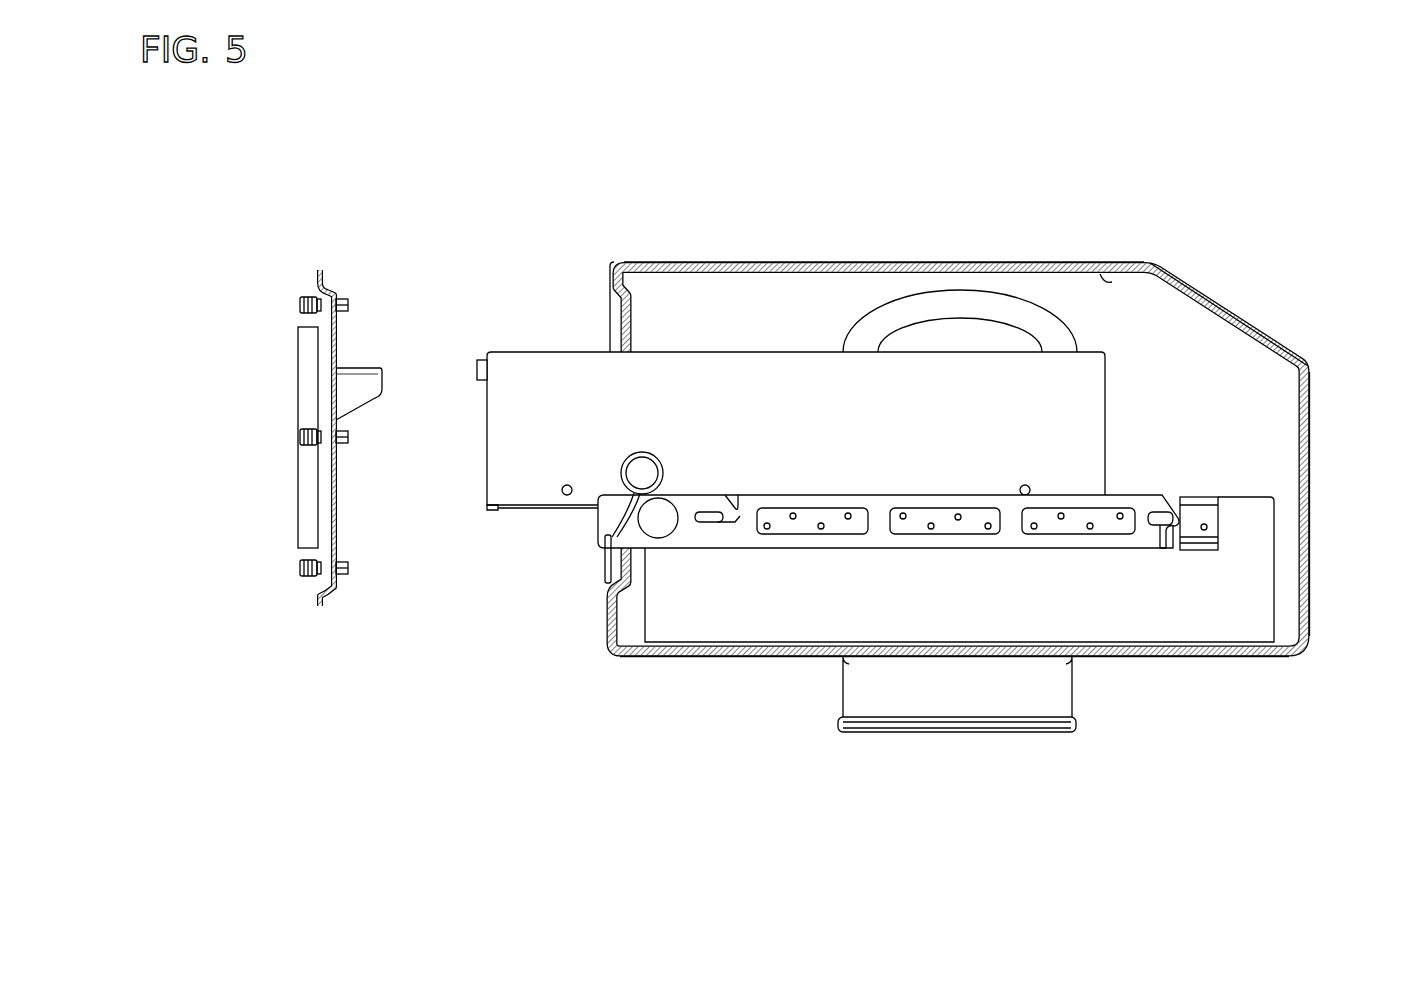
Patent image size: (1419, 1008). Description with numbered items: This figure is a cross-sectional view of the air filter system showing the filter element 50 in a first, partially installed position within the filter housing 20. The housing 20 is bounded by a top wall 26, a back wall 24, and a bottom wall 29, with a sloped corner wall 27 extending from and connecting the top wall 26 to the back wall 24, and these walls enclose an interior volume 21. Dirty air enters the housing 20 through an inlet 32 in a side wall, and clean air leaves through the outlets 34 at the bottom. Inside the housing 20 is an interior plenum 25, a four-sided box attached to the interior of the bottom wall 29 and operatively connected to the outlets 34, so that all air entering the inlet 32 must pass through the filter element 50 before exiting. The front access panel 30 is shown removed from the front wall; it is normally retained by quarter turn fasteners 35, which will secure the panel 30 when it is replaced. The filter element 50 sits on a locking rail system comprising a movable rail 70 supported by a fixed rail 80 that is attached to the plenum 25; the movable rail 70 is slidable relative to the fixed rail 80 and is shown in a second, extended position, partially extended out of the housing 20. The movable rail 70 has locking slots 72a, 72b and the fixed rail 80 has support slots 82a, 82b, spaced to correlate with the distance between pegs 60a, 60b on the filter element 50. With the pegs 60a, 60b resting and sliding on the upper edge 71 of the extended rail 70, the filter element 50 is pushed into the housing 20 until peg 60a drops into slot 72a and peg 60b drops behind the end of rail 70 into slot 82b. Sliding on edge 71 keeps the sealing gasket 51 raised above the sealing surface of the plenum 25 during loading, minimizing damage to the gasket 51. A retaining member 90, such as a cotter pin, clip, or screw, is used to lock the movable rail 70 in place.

The filter housing 20 is at (1020, 262).
The interior volume 21 is at (1098, 270).
The back wall 24 is at (1311, 440).
The interior plenum 25 is at (1274, 605).
The top wall 26 is at (768, 263).
The sloped corner wall 27 is at (1232, 312).
The bottom wall 29 is at (1175, 656).
The front access panel 30 is at (296, 506).
The inlet 32 is at (906, 298).
The outlets 34 is at (897, 732).
The quarter turn fasteners 35 is at (298, 303).
The filter element 50 is at (518, 350).
The gasket 51 is at (513, 509).
The peg 60a is at (563, 494).
The peg 60b is at (1028, 486).
The movable rail 70 is at (776, 548).
The upper edge 71 is at (899, 495).
The locking slot 72a is at (701, 524).
The locking slot 72b is at (1157, 525).
The fixed rail 80 is at (1201, 497).
The support slot 82a is at (706, 513).
The support slot 82b is at (1167, 503).
The retaining member 90 is at (603, 565).